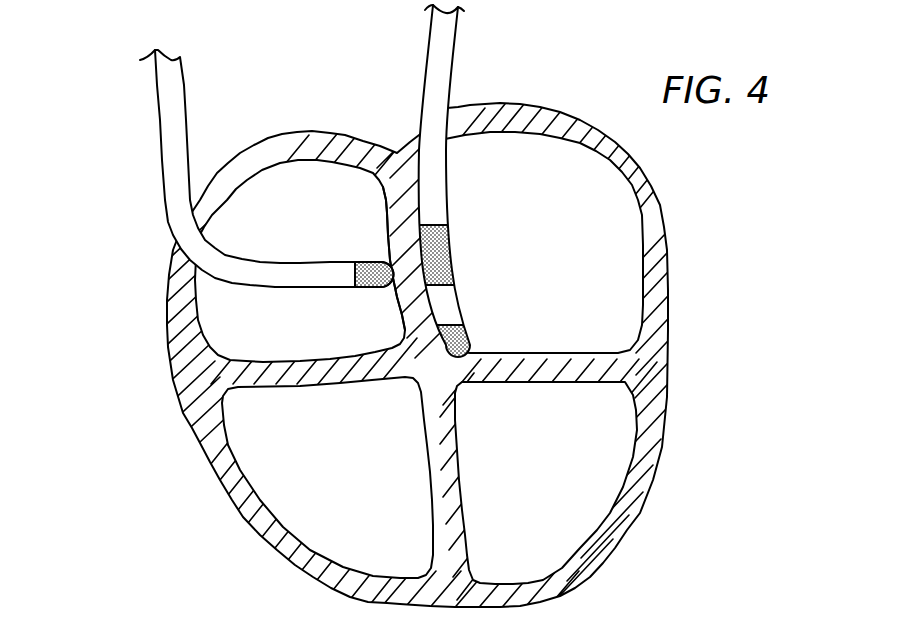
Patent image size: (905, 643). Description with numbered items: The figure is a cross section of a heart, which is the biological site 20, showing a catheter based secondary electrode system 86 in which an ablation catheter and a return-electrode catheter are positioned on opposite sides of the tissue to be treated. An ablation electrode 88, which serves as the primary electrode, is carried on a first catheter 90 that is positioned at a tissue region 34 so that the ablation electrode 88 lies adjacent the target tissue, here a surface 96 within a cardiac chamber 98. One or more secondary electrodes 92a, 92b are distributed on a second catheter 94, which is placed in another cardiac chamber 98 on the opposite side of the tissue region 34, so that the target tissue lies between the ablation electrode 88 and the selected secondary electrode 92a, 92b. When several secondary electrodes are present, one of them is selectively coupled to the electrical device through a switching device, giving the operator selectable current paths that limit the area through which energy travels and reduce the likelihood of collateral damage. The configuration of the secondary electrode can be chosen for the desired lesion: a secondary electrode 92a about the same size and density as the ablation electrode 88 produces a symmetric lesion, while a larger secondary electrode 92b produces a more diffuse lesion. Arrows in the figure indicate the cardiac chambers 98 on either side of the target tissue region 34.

The biological site 20 is at (203, 452).
The tissue region 34 is at (383, 210).
The catheter based secondary electrode system 86 is at (598, 77).
The ablation electrode 88 is at (367, 262).
The first catheter 90 is at (186, 100).
The secondary electrode 92a is at (469, 333).
The secondary electrode 92b is at (451, 250).
The second catheter 94 is at (450, 79).
The surface 96 is at (393, 292).
The cardiac chamber 98 is at (226, 307).